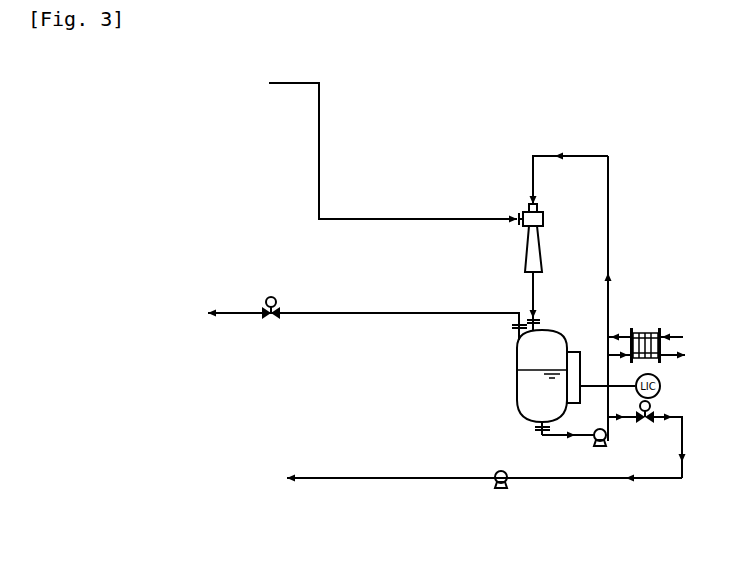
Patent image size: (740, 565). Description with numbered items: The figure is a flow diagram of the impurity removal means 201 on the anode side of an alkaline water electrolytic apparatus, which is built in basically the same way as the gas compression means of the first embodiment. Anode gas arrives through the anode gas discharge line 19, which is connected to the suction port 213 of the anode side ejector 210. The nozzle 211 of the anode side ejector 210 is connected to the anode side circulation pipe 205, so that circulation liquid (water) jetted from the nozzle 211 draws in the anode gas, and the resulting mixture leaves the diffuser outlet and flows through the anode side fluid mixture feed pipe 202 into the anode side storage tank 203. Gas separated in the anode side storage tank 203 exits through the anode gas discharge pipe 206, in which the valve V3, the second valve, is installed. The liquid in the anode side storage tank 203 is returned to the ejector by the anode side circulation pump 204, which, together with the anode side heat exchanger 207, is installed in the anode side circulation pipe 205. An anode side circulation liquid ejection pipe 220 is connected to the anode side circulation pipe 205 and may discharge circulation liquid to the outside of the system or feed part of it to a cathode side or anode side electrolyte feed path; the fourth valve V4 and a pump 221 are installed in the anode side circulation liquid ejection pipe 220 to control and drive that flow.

The anode gas discharge line 19 is at (405, 217).
The impurity removal means 201 is at (585, 146).
The anode side fluid mixture feed pipe 202 is at (534, 301).
The anode side storage tank 203 is at (516, 358).
The anode side circulation pump 204 is at (599, 446).
The anode side circulation pipe 205 is at (609, 257).
The anode gas discharge pipe 206 is at (383, 315).
The anode side heat exchanger 207 is at (640, 328).
The anode side ejector 210 is at (540, 252).
The nozzle 211 is at (538, 206).
The suction port 213 is at (520, 226).
The anode side circulation liquid ejection pipe 220 is at (335, 476).
The pump 221 is at (500, 488).
The valve V3 is at (274, 319).
The fourth valve V4 is at (647, 439).